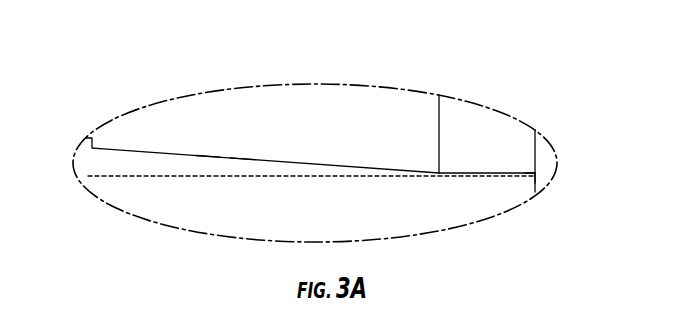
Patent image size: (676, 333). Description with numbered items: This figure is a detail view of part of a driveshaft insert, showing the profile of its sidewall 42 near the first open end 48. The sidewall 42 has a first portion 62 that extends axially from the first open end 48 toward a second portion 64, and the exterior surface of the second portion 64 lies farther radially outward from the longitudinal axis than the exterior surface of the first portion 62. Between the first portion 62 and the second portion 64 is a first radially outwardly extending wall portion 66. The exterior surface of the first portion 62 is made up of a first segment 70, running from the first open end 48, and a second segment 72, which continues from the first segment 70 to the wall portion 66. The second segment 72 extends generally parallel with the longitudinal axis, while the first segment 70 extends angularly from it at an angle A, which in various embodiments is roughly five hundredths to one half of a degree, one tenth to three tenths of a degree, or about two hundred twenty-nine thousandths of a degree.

The sidewall 42 is at (337, 98).
The first open end 48 is at (88, 141).
The first portion 62 is at (307, 163).
The first segment 70 is at (208, 157).
The angle A is at (243, 160).
The second segment 72 is at (466, 173).
The second portion 64 is at (535, 190).
The first radially outwardly extending wall portion 66 is at (532, 177).